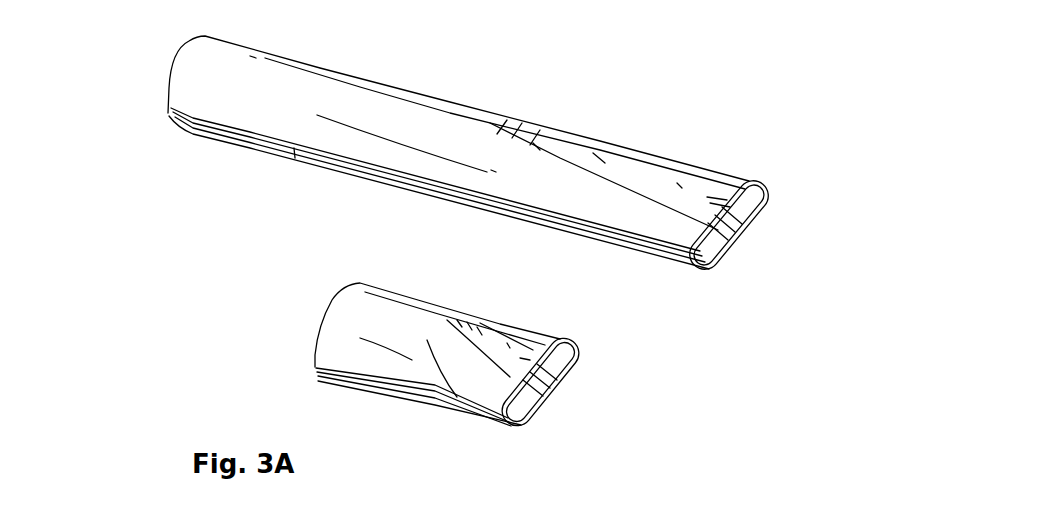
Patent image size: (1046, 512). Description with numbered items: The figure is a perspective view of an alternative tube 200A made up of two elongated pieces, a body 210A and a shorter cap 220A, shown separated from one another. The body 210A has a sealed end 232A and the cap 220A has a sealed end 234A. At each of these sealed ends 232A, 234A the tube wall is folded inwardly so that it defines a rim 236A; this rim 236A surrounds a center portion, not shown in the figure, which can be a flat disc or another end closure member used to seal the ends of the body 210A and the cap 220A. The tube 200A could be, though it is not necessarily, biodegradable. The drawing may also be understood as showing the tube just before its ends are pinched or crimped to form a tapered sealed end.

The alternative tube 200A is at (121, 233).
The body 210A is at (417, 110).
The cap 220A is at (415, 315).
The sealed end 232A is at (738, 213).
The sealed end 234A is at (540, 387).
The rim 236A is at (740, 232).